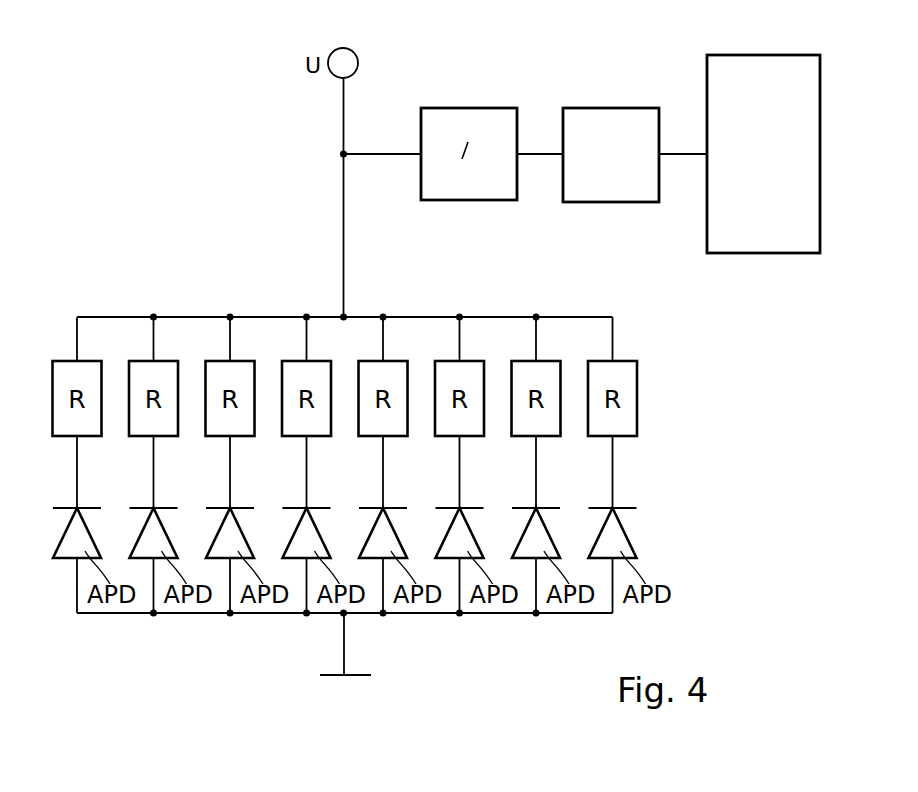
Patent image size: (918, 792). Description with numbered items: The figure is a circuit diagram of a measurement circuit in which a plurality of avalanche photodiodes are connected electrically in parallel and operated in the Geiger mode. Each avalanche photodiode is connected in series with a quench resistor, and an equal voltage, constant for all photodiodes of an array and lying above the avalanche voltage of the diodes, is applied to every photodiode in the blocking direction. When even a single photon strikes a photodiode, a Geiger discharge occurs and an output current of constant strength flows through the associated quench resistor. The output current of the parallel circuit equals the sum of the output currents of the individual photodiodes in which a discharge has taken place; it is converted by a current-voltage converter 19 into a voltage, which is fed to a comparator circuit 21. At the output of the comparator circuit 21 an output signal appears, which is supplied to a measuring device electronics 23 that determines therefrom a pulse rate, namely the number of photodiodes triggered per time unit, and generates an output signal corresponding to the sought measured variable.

The current-voltage converter 19 is at (468, 117).
The comparator circuit 21 is at (596, 165).
The measuring device electronics 23 is at (748, 165).